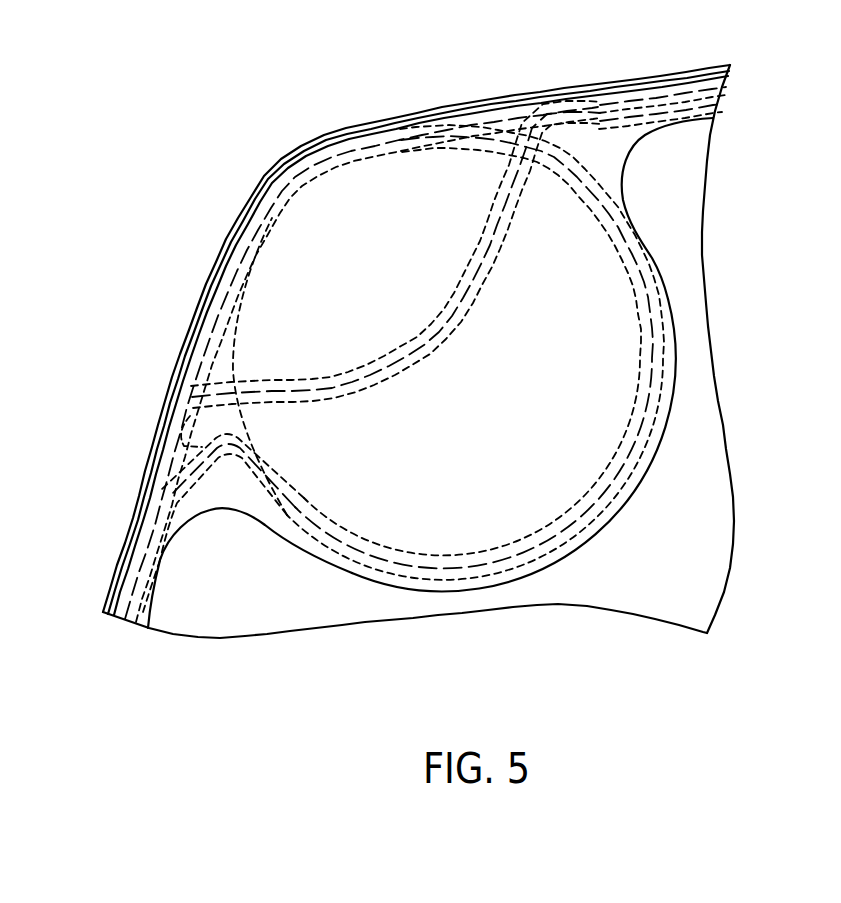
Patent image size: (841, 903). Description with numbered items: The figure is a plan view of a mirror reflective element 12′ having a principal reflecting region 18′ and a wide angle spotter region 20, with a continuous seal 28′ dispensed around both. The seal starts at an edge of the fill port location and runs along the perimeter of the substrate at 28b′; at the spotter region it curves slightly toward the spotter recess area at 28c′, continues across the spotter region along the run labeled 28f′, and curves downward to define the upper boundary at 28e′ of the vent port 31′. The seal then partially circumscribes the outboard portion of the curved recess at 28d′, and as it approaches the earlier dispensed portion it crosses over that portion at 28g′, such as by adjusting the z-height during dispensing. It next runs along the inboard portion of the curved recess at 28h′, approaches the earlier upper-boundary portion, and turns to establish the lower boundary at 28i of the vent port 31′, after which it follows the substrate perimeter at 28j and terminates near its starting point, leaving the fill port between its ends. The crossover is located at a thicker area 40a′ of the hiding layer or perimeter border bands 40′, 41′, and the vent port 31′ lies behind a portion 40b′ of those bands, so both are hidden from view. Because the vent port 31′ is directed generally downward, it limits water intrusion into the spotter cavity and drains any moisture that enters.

The mirror reflective element 12′ is at (207, 175).
The principal reflecting region 18′ is at (704, 361).
The wide angle spotter region 20 is at (392, 88).
The seal 28′ is at (613, 100).
The perimeter seal portion 28b′ is at (700, 110).
The spotter-approach seal portion 28c′ is at (527, 128).
The outboard recess seal portion 28d′ is at (265, 194).
The upper vent boundary seal portion 28e′ is at (186, 433).
The adhesive bead crossing portion 28f′ is at (437, 347).
The crossover seal portion 28g′ is at (538, 168).
The inboard recess seal portion 28h′ is at (580, 520).
The lower vent boundary seal portion 28i is at (160, 493).
The terminating perimeter seal portion 28j is at (126, 586).
The vent port 31′ is at (185, 453).
The perimeter border band 40′ is at (146, 624).
The thicker portion of hiding layer 40a′ is at (606, 139).
The vent-hiding portion of hiding layer 40b′ is at (218, 508).
The perimeter border band 41′ is at (643, 470).